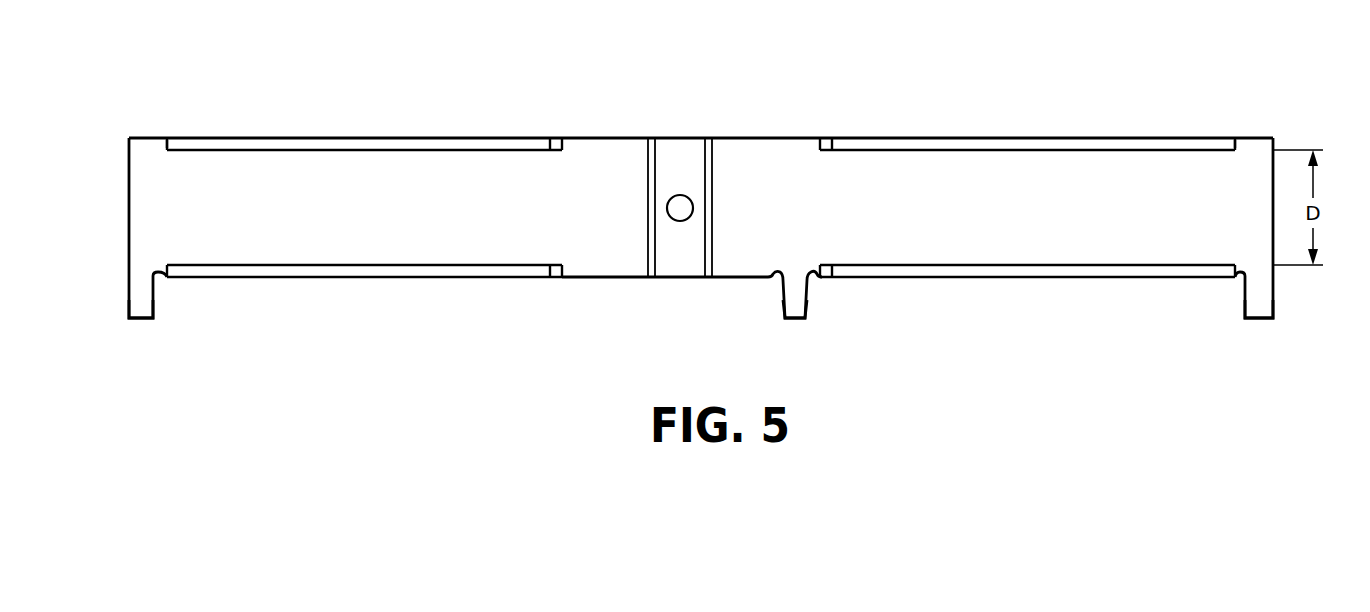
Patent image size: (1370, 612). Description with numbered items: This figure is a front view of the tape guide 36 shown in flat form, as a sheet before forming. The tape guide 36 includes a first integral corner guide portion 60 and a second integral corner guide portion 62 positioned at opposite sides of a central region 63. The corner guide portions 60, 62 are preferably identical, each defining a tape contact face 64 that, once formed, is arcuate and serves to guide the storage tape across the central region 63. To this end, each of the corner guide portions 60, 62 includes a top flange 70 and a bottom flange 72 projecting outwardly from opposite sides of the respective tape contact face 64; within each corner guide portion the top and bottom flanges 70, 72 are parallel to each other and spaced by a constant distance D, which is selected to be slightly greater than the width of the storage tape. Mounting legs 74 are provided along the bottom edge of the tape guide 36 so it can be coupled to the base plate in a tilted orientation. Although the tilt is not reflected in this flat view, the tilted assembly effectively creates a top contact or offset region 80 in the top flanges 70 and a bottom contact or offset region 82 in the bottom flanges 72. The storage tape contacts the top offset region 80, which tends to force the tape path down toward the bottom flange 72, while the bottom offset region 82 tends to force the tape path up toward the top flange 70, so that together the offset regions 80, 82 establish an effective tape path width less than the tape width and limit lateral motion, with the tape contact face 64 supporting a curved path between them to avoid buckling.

The tape guide 36 is at (646, 100).
The first integral corner guide portion 60 is at (222, 122).
The second integral corner guide portion 62 is at (1186, 126).
The central region 63 is at (680, 290).
The arcuate tape contact face 64 is at (355, 180).
The top flange 70 is at (448, 145).
The bottom flange 72 is at (386, 268).
The mounting legs 74 is at (140, 302).
The top contact or offset region 80 is at (199, 155).
The bottom contact or offset region 82 is at (480, 263).